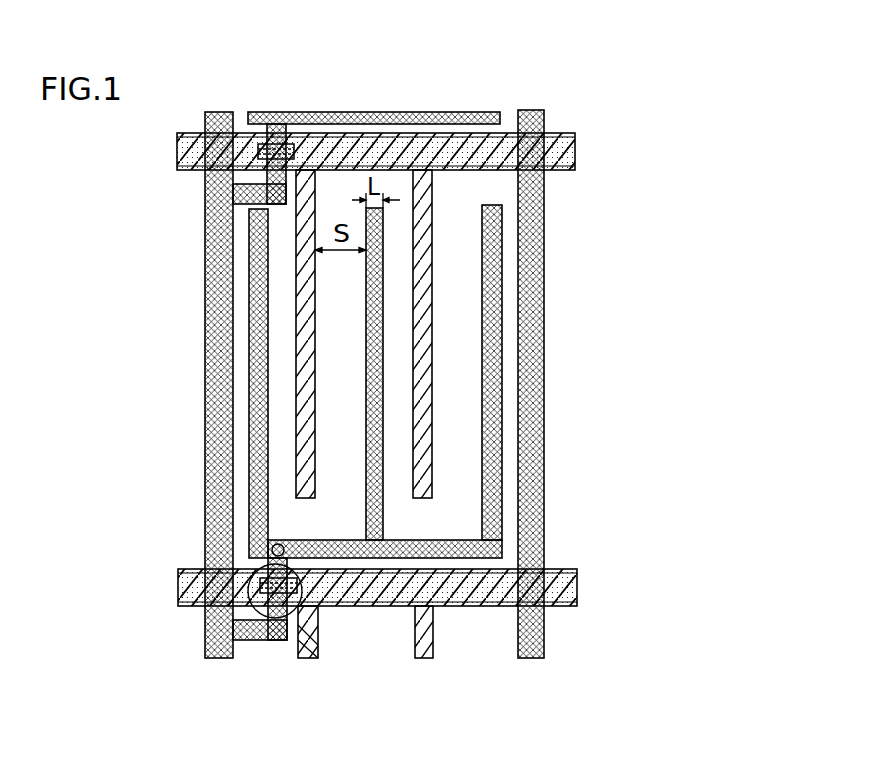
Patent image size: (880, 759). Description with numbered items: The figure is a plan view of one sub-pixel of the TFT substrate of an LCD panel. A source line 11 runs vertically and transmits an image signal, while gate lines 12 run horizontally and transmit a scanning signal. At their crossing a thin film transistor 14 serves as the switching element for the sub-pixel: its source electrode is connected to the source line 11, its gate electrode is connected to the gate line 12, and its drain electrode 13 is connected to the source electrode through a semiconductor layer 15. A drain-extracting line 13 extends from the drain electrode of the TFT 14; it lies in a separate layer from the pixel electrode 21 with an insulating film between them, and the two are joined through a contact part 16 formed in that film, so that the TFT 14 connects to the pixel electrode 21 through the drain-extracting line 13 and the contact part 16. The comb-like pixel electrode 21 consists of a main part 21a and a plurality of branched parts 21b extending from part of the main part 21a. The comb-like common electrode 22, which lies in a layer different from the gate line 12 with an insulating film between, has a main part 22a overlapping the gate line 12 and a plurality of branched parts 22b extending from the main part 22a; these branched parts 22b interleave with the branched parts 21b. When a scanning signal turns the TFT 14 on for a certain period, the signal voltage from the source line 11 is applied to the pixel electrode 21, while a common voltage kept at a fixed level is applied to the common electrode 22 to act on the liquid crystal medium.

The source line 11 is at (210, 223).
The gate line 12 is at (178, 149).
The drain-extracting line 13 is at (205, 571).
The thin film transistor 14 is at (272, 637).
The semiconductor layer 15 is at (318, 650).
The contact part 16 is at (271, 549).
The pixel electrode 21 is at (272, 422).
The main part of pixel electrode 21a is at (287, 545).
The branched parts of pixel electrode 21b is at (257, 453).
The common electrode 22 is at (492, 305).
The main part of common electrode 22a is at (557, 170).
The branched parts of common electrode 22b is at (423, 231).